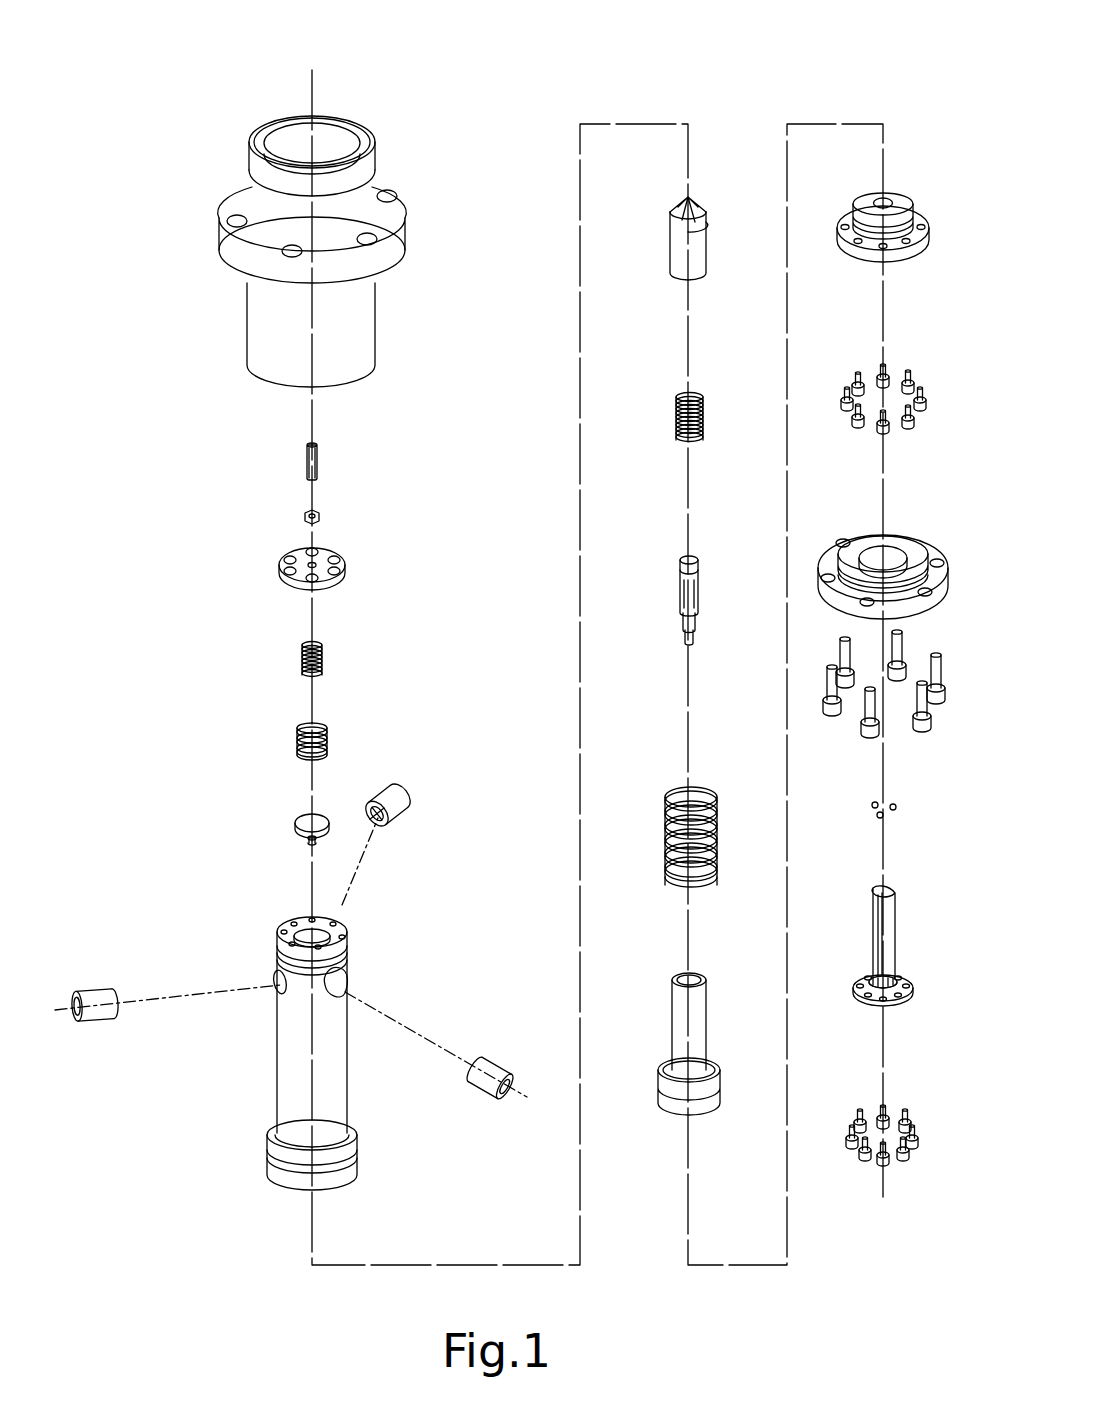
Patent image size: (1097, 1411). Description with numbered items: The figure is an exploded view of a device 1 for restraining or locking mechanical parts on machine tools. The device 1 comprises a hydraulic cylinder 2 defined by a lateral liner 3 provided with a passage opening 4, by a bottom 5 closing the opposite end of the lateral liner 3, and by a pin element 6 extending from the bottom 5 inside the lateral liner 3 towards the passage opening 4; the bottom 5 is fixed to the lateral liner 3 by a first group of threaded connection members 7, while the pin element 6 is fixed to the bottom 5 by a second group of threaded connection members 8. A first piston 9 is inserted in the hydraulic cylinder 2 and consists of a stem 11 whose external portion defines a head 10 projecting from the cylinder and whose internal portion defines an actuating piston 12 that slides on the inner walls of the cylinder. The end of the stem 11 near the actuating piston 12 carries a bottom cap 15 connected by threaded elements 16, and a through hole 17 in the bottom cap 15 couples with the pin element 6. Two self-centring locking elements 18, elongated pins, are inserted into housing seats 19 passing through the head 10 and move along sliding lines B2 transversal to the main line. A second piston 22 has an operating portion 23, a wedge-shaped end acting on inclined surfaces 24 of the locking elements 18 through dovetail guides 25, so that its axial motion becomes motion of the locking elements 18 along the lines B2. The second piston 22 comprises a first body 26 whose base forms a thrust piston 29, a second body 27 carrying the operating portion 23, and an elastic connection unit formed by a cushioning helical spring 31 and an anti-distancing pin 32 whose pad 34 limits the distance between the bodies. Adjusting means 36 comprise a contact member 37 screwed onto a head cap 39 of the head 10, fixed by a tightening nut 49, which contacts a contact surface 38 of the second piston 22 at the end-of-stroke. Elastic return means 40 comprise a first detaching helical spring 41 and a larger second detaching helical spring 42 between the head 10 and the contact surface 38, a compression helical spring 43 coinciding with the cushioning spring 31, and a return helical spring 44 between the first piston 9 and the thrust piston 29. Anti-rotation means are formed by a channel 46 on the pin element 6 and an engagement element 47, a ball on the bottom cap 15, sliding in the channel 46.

The device 1 is at (111, 49).
The hydraulic cylinder 2 is at (219, 304).
The lateral liner 3 is at (372, 312).
The passage opening 4 is at (296, 118).
The bottom 5 is at (917, 535).
The pin element 6 is at (893, 923).
The first group of threaded connection members 7 is at (868, 735).
The second group of threaded connection members 8 is at (852, 1135).
The first piston 9 is at (255, 1123).
The head 10 is at (280, 935).
The stem 11 is at (287, 1045).
The actuating piston 12 is at (357, 1170).
The bottom cap 15 is at (850, 212).
The threaded elements 16 is at (882, 372).
The through hole 17 is at (886, 198).
The self-centring locking elements 18 is at (100, 1018).
The lateral opening 19 is at (278, 980).
The second piston 22 is at (655, 287).
The operating portion 23 is at (700, 240).
The inclined surfaces 24 is at (373, 815).
The dovetail guides 25 is at (382, 820).
The first body 26 is at (700, 1003).
The second body 27 is at (701, 258).
The thrust piston 29 is at (713, 1085).
The cushioning helical spring 31 is at (676, 397).
The anti-distancing pin 32 is at (684, 590).
The pad 34 is at (680, 570).
The adjusting means 36 is at (277, 439).
The contact member 37 is at (318, 462).
The contact surface 38 is at (305, 818).
The head cap 39 is at (335, 557).
The elastic return means 40 is at (271, 720).
The first detaching helical spring 41 is at (323, 650).
The second detaching helical spring 42 is at (328, 730).
The compression helical spring 43 is at (670, 436).
The return helical spring 44 is at (675, 790).
The channel 46 is at (872, 948).
The engagement element 47 is at (872, 806).
The tightening nut 49 is at (304, 517).
The sliding lines B2 is at (357, 878).